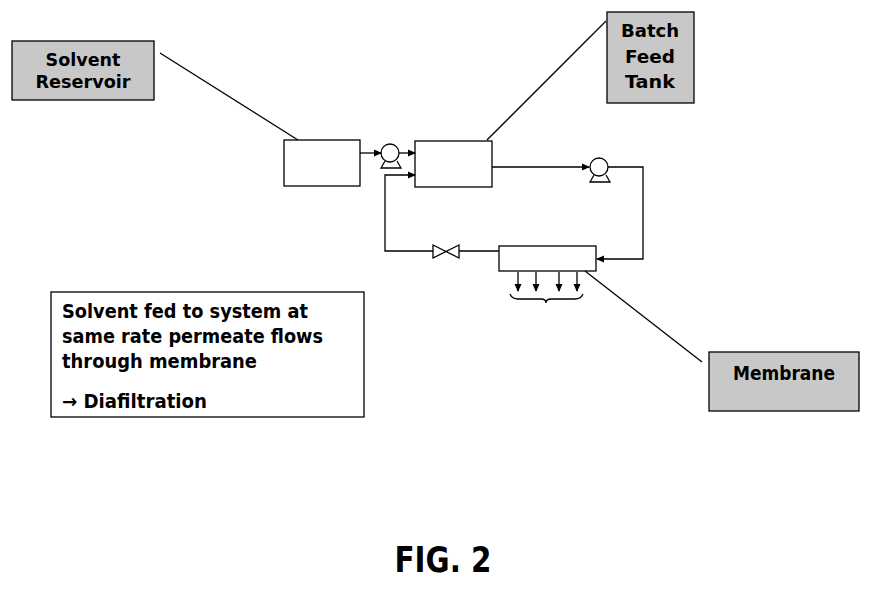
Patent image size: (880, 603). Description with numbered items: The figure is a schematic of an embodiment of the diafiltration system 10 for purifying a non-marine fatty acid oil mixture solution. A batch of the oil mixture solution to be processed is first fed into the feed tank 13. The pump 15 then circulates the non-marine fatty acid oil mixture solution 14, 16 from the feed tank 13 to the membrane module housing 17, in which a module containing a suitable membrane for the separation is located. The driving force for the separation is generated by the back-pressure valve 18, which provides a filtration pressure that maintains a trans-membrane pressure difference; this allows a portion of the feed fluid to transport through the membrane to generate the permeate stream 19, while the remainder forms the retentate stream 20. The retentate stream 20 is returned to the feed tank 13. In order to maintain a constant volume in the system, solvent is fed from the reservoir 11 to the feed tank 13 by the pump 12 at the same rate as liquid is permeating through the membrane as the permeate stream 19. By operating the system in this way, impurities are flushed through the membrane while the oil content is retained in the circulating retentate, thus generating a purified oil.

The diafiltration system 10 is at (258, 137).
The reservoir 11 is at (307, 139).
The pump 12 is at (392, 143).
The feed tank 13 is at (455, 140).
The non-marine fatty acid oil mixture solution 14 is at (532, 166).
The pump 15 is at (604, 158).
The non-marine fatty acid oil mixture solution 16 is at (644, 203).
The membrane module housing 17 is at (549, 246).
The back-pressure valve 18 is at (447, 258).
The permeate stream 19 is at (546, 297).
The retentate stream 20 is at (383, 213).